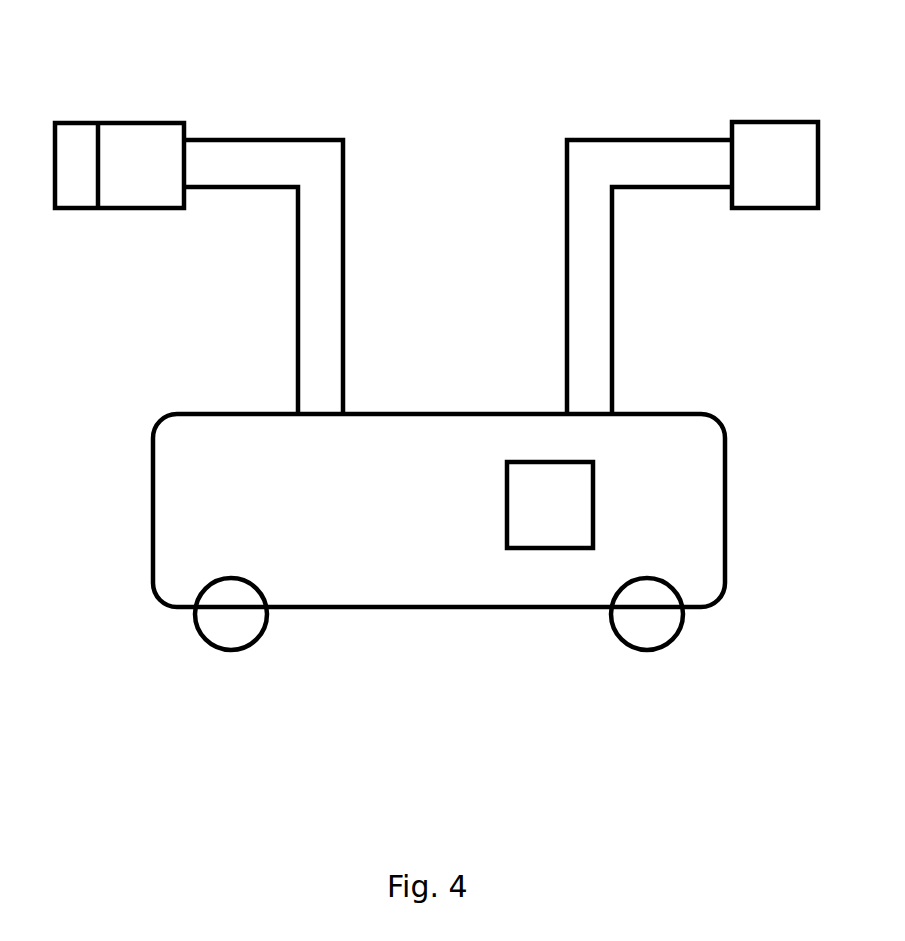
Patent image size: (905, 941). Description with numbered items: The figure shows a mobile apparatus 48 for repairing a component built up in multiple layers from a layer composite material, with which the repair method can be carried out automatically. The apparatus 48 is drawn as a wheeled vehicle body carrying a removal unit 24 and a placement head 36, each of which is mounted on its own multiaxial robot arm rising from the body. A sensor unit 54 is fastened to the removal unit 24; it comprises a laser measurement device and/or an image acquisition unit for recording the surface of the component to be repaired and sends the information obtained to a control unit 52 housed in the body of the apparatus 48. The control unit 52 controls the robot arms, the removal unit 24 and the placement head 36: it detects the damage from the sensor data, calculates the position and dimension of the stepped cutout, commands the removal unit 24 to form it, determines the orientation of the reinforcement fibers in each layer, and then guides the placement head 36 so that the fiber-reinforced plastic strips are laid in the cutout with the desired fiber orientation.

The mobile apparatus 48 is at (525, 91).
The removal unit 24 is at (143, 138).
The sensor unit 54 is at (82, 138).
The placement head 36 is at (763, 137).
The control unit 52 is at (563, 517).